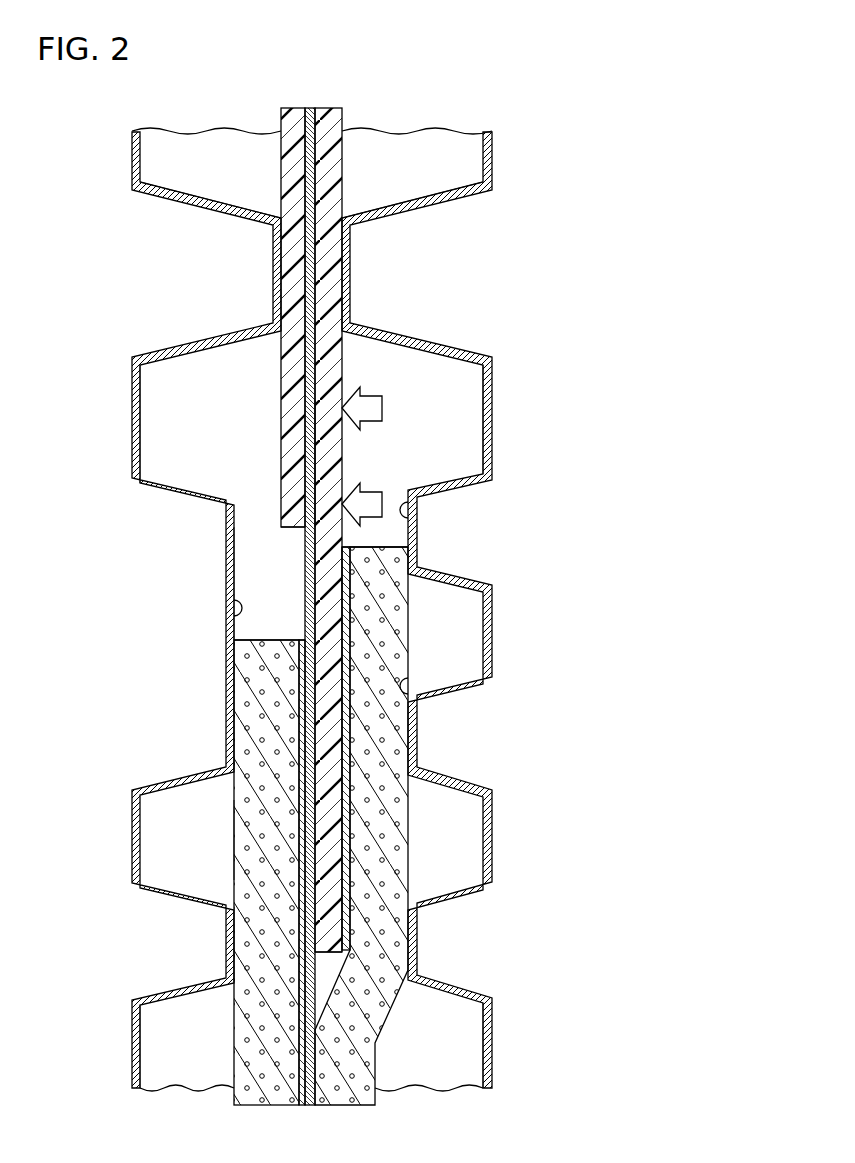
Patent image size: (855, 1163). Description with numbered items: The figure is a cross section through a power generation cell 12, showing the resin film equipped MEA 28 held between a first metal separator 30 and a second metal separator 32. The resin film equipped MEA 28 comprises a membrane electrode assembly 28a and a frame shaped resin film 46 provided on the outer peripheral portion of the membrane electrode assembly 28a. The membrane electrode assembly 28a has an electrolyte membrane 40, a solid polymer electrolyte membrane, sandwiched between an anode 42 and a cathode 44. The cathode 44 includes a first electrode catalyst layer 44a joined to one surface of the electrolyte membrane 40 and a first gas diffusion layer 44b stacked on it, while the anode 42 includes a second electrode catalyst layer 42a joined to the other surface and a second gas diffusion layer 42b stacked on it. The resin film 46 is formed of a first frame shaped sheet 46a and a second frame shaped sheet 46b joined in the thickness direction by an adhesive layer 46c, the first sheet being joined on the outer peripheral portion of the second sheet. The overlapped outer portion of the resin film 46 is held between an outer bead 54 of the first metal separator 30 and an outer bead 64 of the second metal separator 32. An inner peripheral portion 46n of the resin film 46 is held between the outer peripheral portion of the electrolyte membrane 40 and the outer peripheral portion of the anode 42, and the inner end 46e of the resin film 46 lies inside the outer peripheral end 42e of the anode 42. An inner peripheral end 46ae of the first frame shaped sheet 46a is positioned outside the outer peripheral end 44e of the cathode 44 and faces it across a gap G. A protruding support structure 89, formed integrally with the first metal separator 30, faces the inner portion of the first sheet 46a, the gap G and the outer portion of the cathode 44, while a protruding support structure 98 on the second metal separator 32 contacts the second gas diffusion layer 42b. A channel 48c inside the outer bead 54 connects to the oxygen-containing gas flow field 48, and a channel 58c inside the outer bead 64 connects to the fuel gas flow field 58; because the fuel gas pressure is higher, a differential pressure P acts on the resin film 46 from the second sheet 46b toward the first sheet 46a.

The power generation cell 12 is at (472, 70).
The resin film equipped MEA 28 is at (304, 572).
The membrane electrode assembly 28a is at (222, 838).
The first metal separator 30 is at (122, 150).
The second metal separator 32 is at (503, 150).
The electrolyte membrane 40 is at (310, 973).
The anode 42 is at (432, 820).
The second electrode catalyst layer 42a is at (345, 717).
The second gas diffusion layer 42b is at (380, 760).
The outer peripheral end of the anode 42e is at (392, 535).
The cathode 44 is at (208, 865).
The first electrode catalyst layer 44a is at (298, 707).
The first gas diffusion layer 44b is at (277, 748).
The outer peripheral end of the cathode 44e is at (236, 628).
The resin film 46 is at (345, 533).
The first frame shaped sheet 46a is at (298, 270).
The second frame shaped sheet 46b is at (328, 256).
The adhesive layer 46c is at (318, 455).
The inner peripheral end of the first frame shaped sheet 46ae is at (286, 533).
The inner end of the resin film 46e is at (325, 957).
The inner peripheral portion of the resin film 46n is at (330, 820).
The oxygen-containing gas flow field 48 is at (162, 1039).
The channel 48c is at (155, 410).
The outer bead 54 is at (208, 198).
The fuel gas flow field 58 is at (455, 1038).
The channel 58c is at (468, 407).
The outer bead 64 is at (412, 199).
The protruding support structure 89 is at (230, 603).
The protruding support structure 98 is at (412, 504).
The gap G is at (298, 593).
The differential pressure P is at (362, 456).